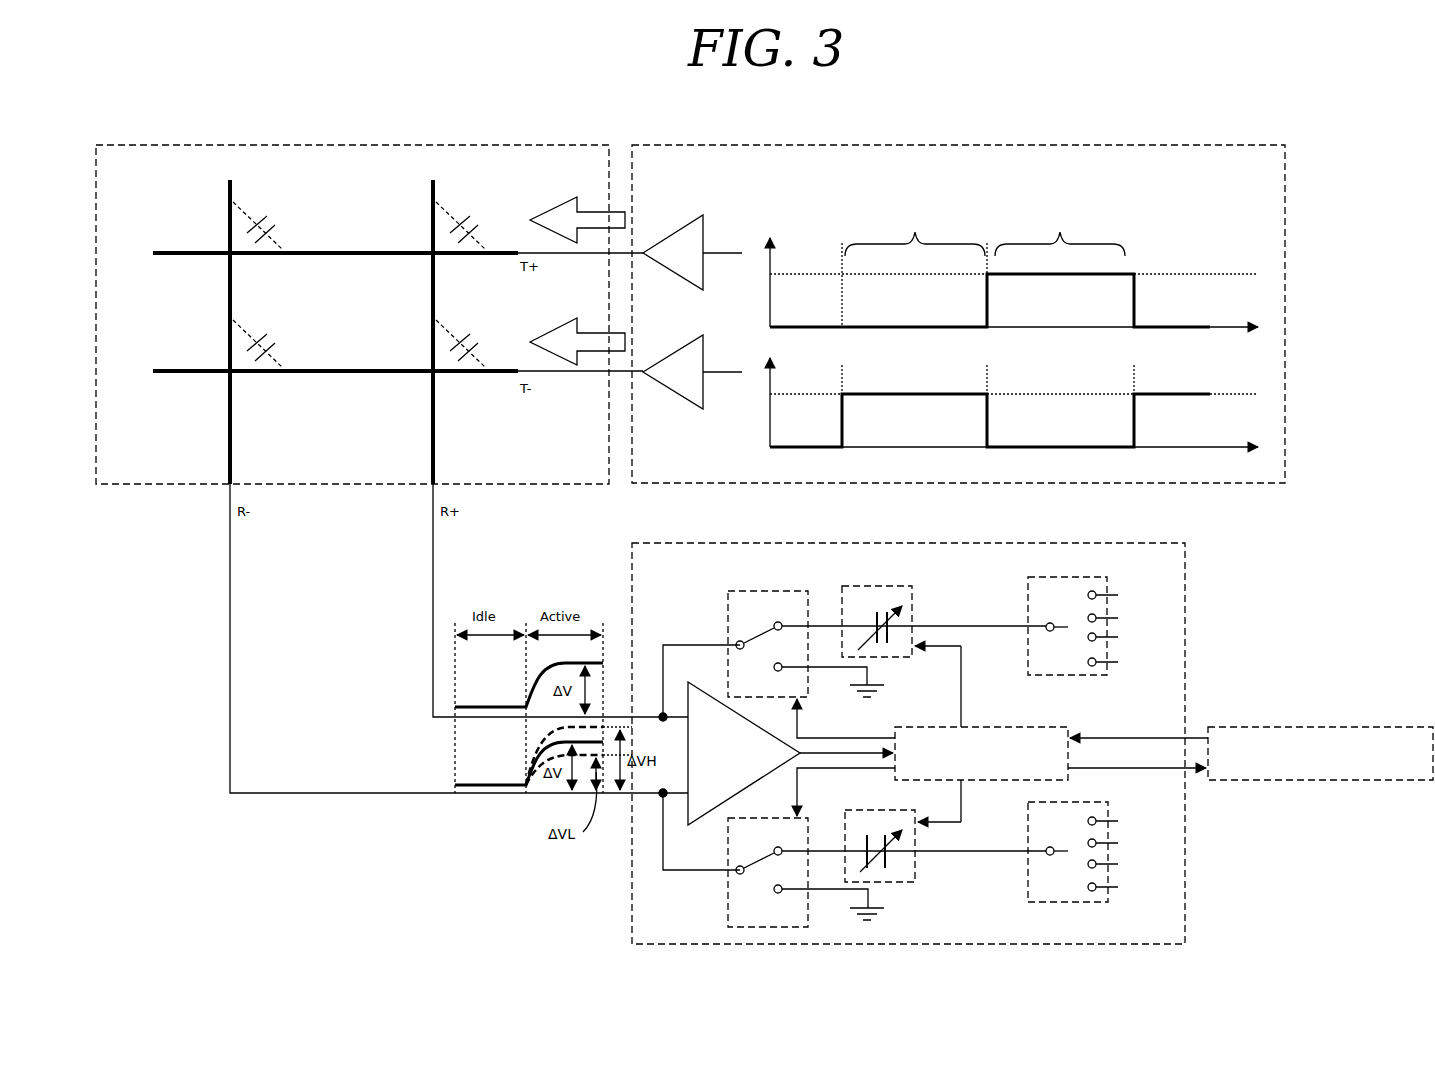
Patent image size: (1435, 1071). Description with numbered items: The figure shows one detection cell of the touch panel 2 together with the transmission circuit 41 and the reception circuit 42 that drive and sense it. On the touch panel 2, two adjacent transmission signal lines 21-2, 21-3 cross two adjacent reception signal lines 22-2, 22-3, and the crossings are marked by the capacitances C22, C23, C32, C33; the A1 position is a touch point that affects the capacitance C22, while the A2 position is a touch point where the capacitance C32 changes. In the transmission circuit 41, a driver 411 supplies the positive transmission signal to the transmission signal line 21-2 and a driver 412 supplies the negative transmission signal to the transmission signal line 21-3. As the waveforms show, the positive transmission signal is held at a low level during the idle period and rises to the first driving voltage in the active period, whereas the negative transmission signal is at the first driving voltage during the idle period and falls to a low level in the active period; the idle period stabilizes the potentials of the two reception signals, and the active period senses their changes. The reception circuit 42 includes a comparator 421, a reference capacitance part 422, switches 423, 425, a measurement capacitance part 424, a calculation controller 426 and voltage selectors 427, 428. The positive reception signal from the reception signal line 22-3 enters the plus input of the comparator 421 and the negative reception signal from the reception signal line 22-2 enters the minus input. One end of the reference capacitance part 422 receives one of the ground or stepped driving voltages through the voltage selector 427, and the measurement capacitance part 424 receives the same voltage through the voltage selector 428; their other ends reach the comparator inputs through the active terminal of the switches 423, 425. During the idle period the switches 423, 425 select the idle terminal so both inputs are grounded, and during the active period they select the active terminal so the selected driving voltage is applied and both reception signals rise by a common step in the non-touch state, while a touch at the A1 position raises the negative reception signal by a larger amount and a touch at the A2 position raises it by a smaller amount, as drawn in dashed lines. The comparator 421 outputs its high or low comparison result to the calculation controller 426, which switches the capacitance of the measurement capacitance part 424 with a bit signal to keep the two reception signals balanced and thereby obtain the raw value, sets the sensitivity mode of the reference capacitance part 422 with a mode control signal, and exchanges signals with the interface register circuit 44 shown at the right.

The touch panel 2 is at (133, 485).
The A1 position A1 is at (213, 247).
The A2 position A2 is at (245, 384).
The transmission signal line 21-2 is at (311, 254).
The transmission signal line 21-3 is at (311, 372).
The reception signal line 22-2 is at (227, 321).
The reception signal line 22-3 is at (430, 321).
The capacitance C22 is at (269, 224).
The capacitance C23 is at (472, 224).
The capacitance C32 is at (269, 342).
The capacitance C33 is at (472, 342).
The transmission circuit 41 is at (781, 144).
The driver 411 is at (690, 240).
The driver 412 is at (690, 390).
The reception circuit 42 is at (1185, 918).
The comparator 421 is at (712, 822).
The reference capacitance part 422 is at (868, 610).
The switch 423 is at (752, 594).
The measurement capacitance part 424 is at (915, 866).
The switch 425 is at (735, 895).
The calculation controller 426 is at (990, 727).
The voltage selector 427 is at (1092, 676).
The voltage selector 428 is at (1085, 802).
The interface register circuit 44 is at (1252, 727).